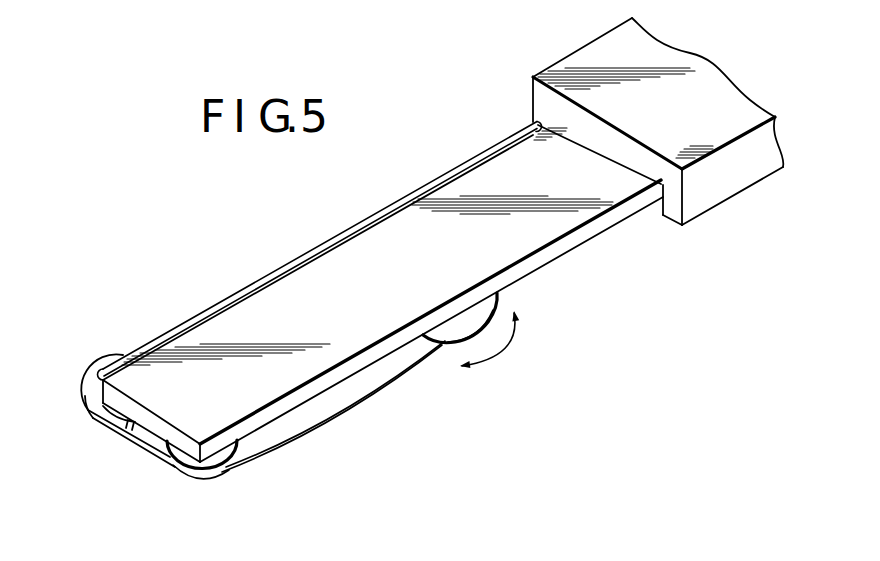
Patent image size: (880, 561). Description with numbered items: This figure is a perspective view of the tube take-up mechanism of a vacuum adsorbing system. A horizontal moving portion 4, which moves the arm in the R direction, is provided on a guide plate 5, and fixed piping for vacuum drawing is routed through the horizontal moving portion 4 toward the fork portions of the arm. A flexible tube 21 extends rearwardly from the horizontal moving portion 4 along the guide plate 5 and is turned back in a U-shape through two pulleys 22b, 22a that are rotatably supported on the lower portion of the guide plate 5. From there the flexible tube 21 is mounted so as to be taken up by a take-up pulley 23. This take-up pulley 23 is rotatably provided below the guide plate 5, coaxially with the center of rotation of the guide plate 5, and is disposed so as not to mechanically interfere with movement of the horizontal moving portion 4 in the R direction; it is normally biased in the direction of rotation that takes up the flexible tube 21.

The horizontal moving portion 4 is at (675, 217).
The guide plate 5 is at (599, 226).
The flexible tube 21 is at (407, 202).
The pulley 22a is at (221, 461).
The pulley 22b is at (96, 386).
The take-up pulley 23 is at (489, 304).